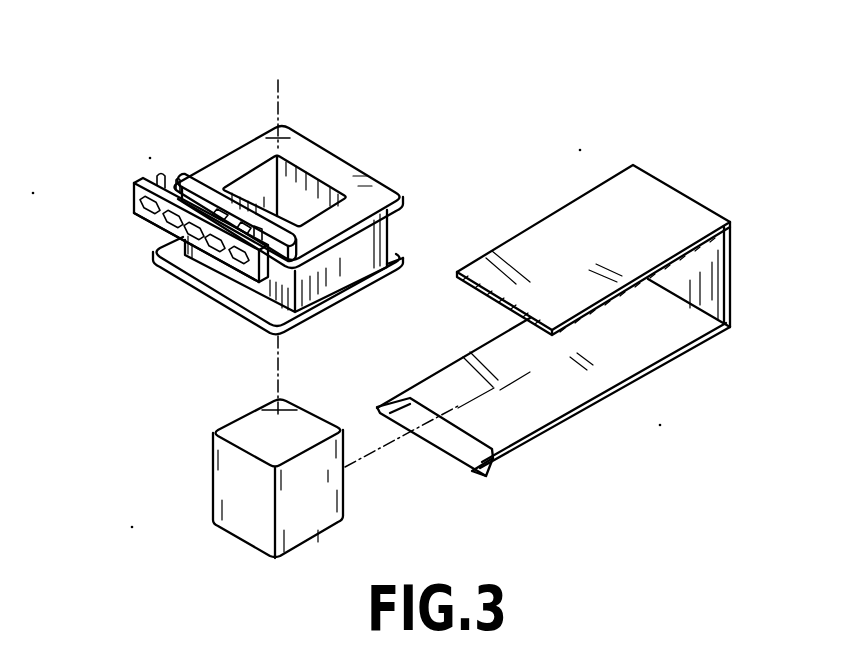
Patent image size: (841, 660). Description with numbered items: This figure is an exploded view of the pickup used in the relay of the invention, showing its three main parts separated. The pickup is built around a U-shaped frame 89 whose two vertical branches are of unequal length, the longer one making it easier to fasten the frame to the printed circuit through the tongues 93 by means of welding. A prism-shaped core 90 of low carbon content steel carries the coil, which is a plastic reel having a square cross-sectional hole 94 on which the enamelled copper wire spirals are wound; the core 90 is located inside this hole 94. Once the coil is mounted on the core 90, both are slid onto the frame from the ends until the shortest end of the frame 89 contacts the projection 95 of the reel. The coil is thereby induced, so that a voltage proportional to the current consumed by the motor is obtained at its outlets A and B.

The U-shaped frame 89 is at (557, 243).
The prism-shaped core 90 is at (230, 482).
The tongues 93 is at (397, 418).
The square cross-sectional hole 94 is at (266, 196).
The projection 95 is at (184, 178).
The outlet A is at (129, 210).
The outlet B is at (250, 258).